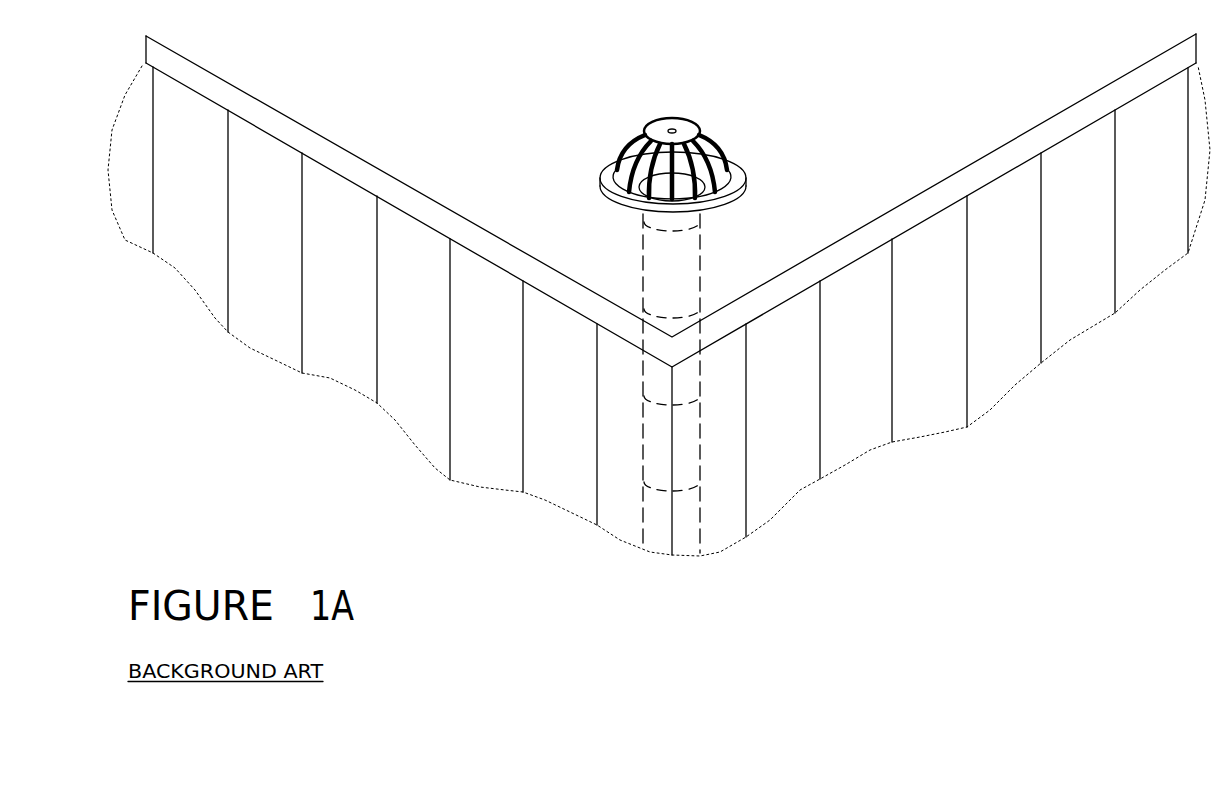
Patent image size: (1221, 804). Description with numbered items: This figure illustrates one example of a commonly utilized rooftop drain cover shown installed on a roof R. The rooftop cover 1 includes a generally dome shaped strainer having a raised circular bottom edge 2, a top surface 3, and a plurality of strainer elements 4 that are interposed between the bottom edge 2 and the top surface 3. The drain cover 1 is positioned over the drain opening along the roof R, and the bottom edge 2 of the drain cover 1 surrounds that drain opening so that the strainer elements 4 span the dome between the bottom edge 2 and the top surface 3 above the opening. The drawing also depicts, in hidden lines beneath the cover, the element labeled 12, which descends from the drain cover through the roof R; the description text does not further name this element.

The rooftop cover 1 is at (649, 117).
The raised circular bottom edge 2 is at (594, 183).
The top surface 3 is at (730, 94).
The strainer elements 4 is at (716, 152).
The drain pipe 12 is at (799, 383).
The roof R is at (973, 76).